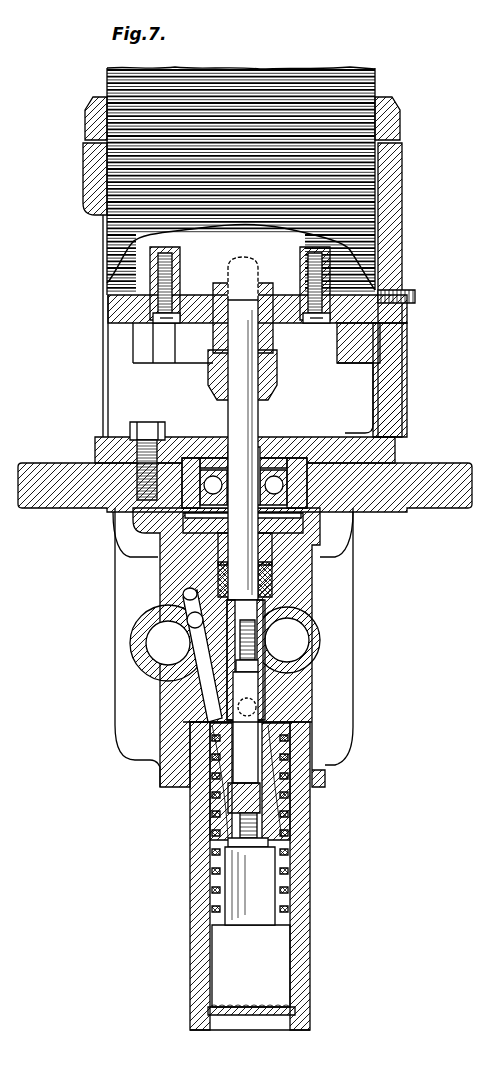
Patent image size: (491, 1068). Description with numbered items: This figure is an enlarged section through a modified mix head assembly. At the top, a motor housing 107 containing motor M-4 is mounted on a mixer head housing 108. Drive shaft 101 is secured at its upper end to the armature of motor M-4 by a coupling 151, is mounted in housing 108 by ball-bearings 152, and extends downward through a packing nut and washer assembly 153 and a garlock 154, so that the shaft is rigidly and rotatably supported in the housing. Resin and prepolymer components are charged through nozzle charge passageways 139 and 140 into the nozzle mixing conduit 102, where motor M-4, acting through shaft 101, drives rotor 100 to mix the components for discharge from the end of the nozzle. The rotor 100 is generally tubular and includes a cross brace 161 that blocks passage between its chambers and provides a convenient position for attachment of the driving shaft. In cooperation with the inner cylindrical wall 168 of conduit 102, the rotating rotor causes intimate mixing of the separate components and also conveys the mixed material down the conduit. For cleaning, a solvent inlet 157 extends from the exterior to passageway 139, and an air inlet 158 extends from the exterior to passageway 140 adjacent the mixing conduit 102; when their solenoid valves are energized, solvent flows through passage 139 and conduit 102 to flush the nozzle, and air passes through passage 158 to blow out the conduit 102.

The motor M-4 is at (350, 88).
The motor housing 107 is at (402, 160).
The mixer head housing 108 is at (434, 463).
The coupling 151 is at (272, 357).
The ball-bearings 152 is at (270, 470).
The packing nut and washer assembly 153 is at (222, 552).
The garlock 154 is at (272, 580).
The drive shaft 101 is at (232, 416).
The solvent inlet 157 is at (195, 617).
The nozzle charge passageway 139 is at (162, 647).
The nozzle charge passageway 140 is at (300, 642).
The air inlet 158 is at (258, 702).
The rotor 100 is at (283, 787).
The nozzle mixing conduit 102 is at (287, 838).
The cross brace 161 is at (228, 813).
The inner cylindrical wall 168 is at (215, 890).